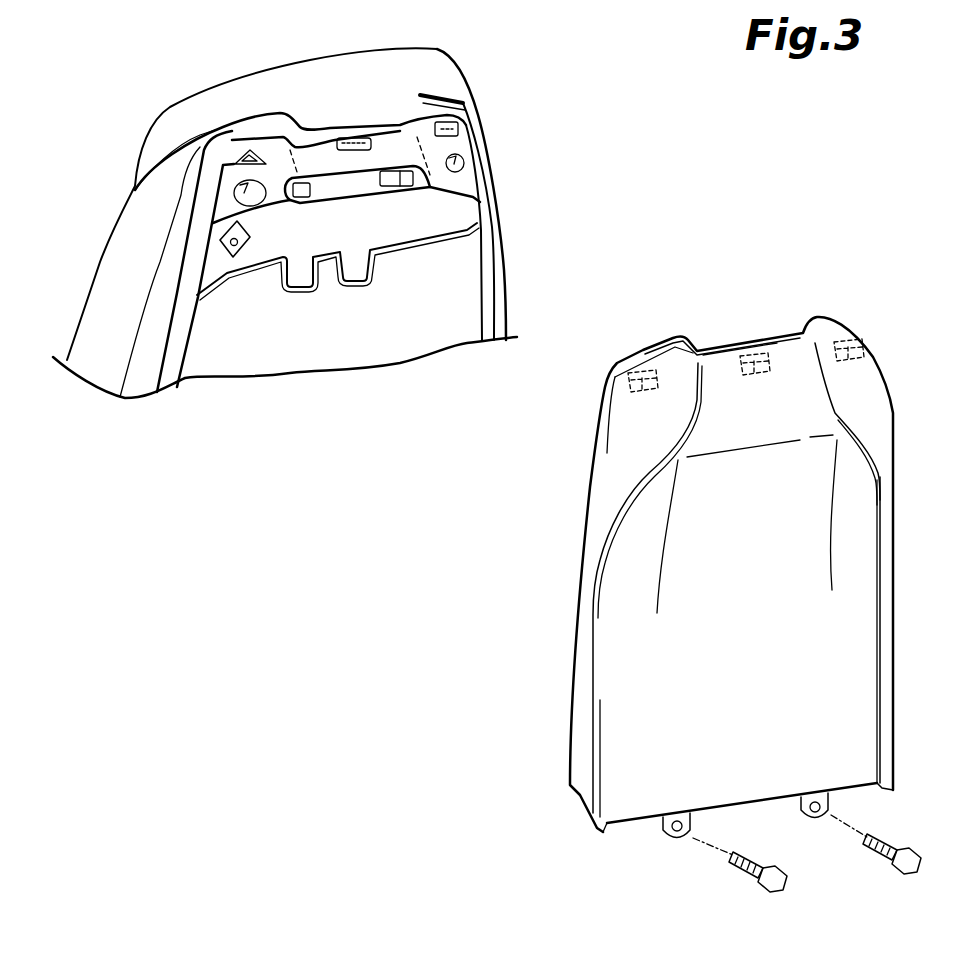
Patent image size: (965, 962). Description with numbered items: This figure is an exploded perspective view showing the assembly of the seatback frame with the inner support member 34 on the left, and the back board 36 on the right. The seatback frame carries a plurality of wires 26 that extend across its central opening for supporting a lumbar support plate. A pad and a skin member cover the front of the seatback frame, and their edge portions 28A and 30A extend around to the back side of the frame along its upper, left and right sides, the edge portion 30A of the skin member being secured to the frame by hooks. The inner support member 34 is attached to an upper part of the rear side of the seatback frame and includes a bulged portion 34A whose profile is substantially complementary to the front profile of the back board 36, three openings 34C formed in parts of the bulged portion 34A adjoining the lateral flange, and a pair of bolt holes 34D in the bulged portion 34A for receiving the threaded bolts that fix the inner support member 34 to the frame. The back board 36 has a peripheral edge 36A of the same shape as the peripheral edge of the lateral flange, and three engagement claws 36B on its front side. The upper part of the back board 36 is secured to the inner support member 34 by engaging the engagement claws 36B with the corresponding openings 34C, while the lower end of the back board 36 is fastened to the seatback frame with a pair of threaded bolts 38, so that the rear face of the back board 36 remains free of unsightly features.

The wires 26 is at (363, 283).
The edge portion of the pad 28A is at (485, 143).
The edge portion of the skin member 30A is at (488, 210).
The inner support member 34 is at (403, 129).
The bulged portion 34A is at (363, 162).
The openings 34C is at (247, 152).
The bolt holes 34D is at (240, 194).
The back board 36 is at (842, 531).
The peripheral edge 36A is at (723, 360).
The engagement claws 36B is at (640, 372).
The threaded bolts 38 is at (730, 858).